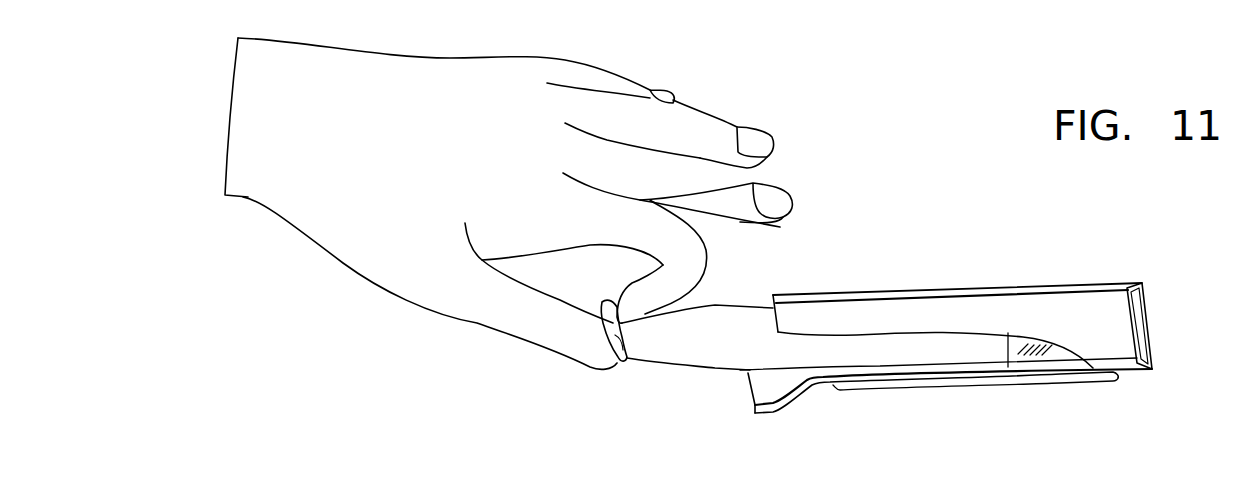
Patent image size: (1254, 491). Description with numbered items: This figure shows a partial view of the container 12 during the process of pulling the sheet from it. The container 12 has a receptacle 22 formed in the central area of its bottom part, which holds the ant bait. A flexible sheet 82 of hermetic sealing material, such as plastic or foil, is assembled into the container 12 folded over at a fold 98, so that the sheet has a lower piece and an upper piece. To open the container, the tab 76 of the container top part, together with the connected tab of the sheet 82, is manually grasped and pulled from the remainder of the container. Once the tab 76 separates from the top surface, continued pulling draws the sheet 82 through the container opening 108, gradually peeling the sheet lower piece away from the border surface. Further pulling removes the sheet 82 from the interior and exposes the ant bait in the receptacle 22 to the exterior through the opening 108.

The container 12 is at (1118, 281).
The receptacle 22 is at (1025, 343).
The tab 76 is at (618, 367).
The flexible sheet 82 is at (752, 333).
The fold 98 is at (1010, 333).
The container opening 108 is at (777, 346).